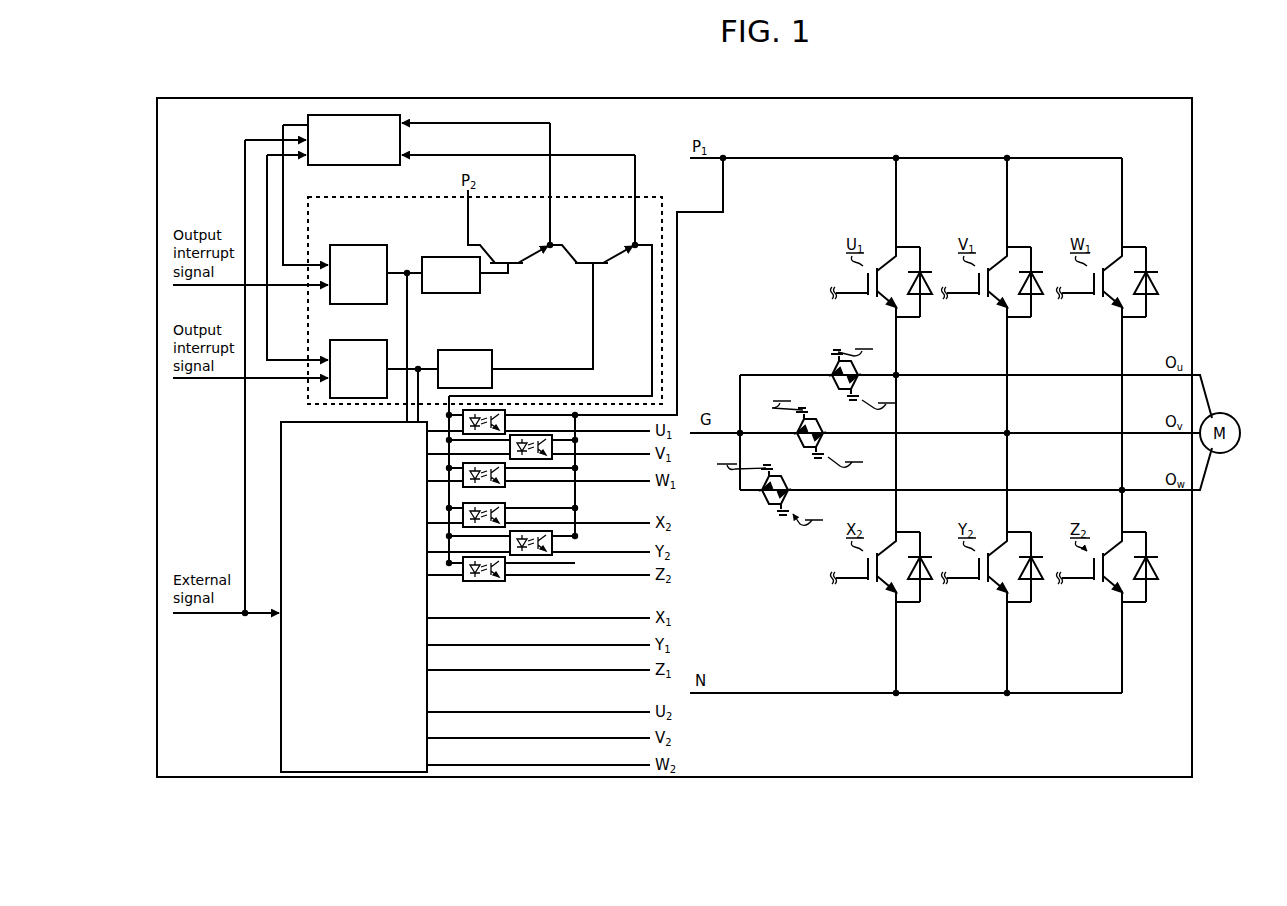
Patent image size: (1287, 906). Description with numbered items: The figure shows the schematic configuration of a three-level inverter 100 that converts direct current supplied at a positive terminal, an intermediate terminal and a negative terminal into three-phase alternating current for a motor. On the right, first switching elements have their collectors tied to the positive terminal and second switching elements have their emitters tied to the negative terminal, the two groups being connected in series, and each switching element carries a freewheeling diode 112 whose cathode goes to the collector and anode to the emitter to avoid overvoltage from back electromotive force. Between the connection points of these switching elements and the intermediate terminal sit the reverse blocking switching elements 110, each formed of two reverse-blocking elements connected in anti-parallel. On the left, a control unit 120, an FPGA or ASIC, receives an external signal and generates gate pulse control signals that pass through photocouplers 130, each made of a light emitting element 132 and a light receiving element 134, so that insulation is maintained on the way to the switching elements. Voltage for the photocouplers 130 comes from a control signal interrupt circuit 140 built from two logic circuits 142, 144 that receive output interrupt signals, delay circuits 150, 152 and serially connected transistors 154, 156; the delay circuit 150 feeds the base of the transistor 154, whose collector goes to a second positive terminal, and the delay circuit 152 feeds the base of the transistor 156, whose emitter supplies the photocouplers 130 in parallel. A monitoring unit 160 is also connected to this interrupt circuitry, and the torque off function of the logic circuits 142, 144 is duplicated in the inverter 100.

The inverter 100 is at (1184, 98).
The reverse blocking switching element 110 is at (766, 468).
The freewheeling diode 112 is at (1161, 605).
The control unit 120 is at (285, 422).
The photocoupler 130 is at (580, 387).
The light emitting element 132 is at (472, 579).
The light receiving element 134 is at (494, 579).
The control signal interrupt circuit 140 is at (400, 197).
The logic circuit 142 is at (345, 245).
The logic circuit 144 is at (345, 340).
The delay circuit 150 is at (454, 257).
The delay circuit 152 is at (464, 350).
The transistor 154 is at (516, 254).
The transistor 156 is at (598, 254).
The monitoring unit 160 is at (394, 115).